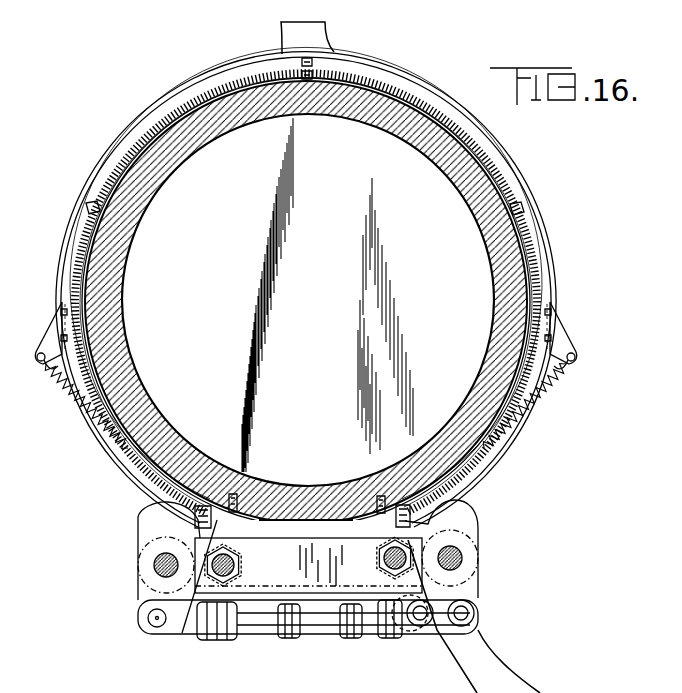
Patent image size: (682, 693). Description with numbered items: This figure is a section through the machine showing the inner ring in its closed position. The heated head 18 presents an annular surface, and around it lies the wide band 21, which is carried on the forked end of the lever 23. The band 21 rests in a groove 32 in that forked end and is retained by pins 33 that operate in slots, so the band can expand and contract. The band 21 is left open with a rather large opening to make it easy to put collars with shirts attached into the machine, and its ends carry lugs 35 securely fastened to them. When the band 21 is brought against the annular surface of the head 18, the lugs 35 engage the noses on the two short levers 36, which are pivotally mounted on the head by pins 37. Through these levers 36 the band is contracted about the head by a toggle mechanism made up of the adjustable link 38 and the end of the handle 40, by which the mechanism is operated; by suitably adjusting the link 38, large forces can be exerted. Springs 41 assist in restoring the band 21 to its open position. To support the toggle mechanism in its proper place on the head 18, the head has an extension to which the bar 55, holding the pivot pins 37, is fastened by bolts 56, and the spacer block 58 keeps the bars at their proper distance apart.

The head 18 is at (138, 382).
The band 21 is at (92, 246).
The lever 23 is at (322, 42).
The groove 32 is at (73, 277).
The pins 33 is at (92, 211).
The lugs 35 is at (192, 532).
The short levers 36 is at (150, 516).
The pins 37 is at (160, 565).
The adjustable link 38 is at (268, 618).
The handle 40 is at (502, 672).
The springs 41 is at (62, 389).
The bar 55 is at (220, 508).
The bolts 56 is at (385, 558).
The spacer block 58 is at (308, 565).